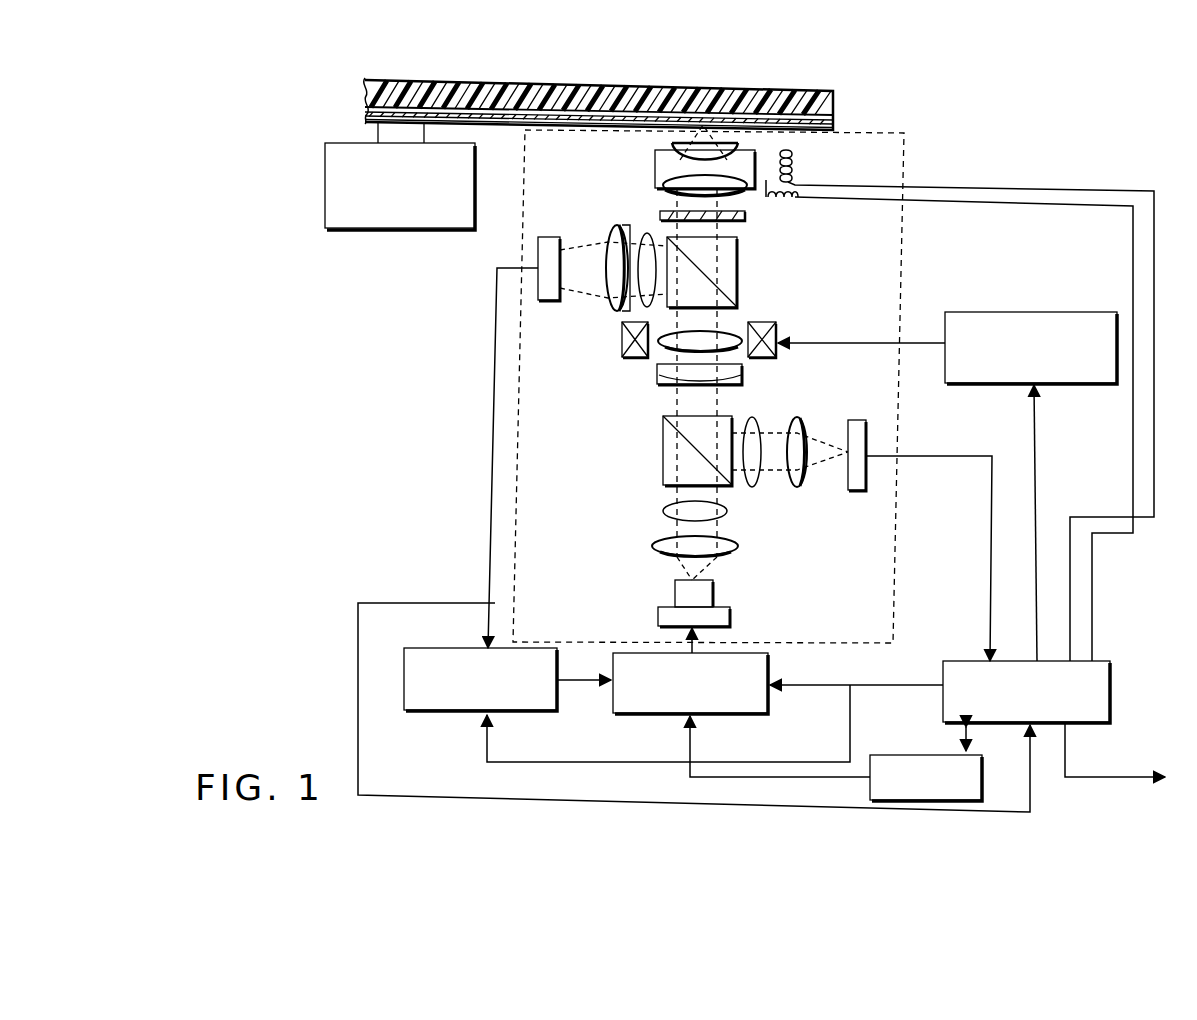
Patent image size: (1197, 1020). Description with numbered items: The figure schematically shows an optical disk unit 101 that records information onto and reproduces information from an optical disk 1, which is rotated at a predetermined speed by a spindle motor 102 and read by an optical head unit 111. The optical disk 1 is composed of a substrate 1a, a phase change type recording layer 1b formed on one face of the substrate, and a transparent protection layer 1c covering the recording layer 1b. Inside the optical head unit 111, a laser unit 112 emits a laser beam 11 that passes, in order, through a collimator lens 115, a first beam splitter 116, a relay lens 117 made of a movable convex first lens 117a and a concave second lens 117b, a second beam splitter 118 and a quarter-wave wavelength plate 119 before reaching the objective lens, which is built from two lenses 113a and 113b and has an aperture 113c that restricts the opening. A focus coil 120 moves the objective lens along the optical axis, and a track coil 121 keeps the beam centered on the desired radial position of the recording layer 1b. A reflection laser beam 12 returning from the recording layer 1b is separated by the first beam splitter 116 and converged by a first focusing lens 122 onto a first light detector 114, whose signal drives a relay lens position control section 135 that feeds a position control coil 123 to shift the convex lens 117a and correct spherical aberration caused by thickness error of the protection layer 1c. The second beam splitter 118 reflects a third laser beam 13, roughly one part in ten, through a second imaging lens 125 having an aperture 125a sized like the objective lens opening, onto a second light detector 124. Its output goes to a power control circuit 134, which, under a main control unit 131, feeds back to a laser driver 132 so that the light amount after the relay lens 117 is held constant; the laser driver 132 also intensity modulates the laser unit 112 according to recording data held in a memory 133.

The optical disk 1 is at (455, 80).
The substrate 1a is at (665, 95).
The phase change type recording layer 1b is at (715, 115).
The transparent protection layer 1c is at (768, 120).
The laser beam 11 is at (690, 510).
The reflection laser beam 12 is at (752, 487).
The third laser beam 13 is at (645, 233).
The optical disk unit 101 is at (1000, 130).
The spindle motor 102 is at (402, 232).
The optical head unit 111 is at (898, 596).
The laser unit 112 is at (656, 612).
The lens of objective lens 113a is at (672, 144).
The lens of objective lens 113b is at (735, 194).
The aperture 113c is at (660, 190).
The first light detector 114 is at (857, 492).
The collimator lens 115 is at (652, 547).
The first beam splitter 116 is at (663, 446).
The relay lens 117 is at (832, 360).
The first lens 117a is at (734, 350).
The second lens 117b is at (745, 378).
The second beam splitter 118 is at (739, 286).
The λ/4 wavelength plate 119 is at (746, 222).
The focus coil 120 is at (797, 157).
The track coil 121 is at (797, 195).
The first focusing lens 122 is at (797, 488).
The position control coil 123 is at (628, 357).
The second light detector 124 is at (536, 250).
The second imaging lens 125 is at (611, 300).
The aperture 125a is at (610, 228).
The main control unit 131 is at (1112, 695).
The laser driver 132 is at (770, 708).
The memory 133 is at (900, 755).
The power control circuit 134 is at (438, 712).
The relay lens position control section 135 is at (1030, 312).